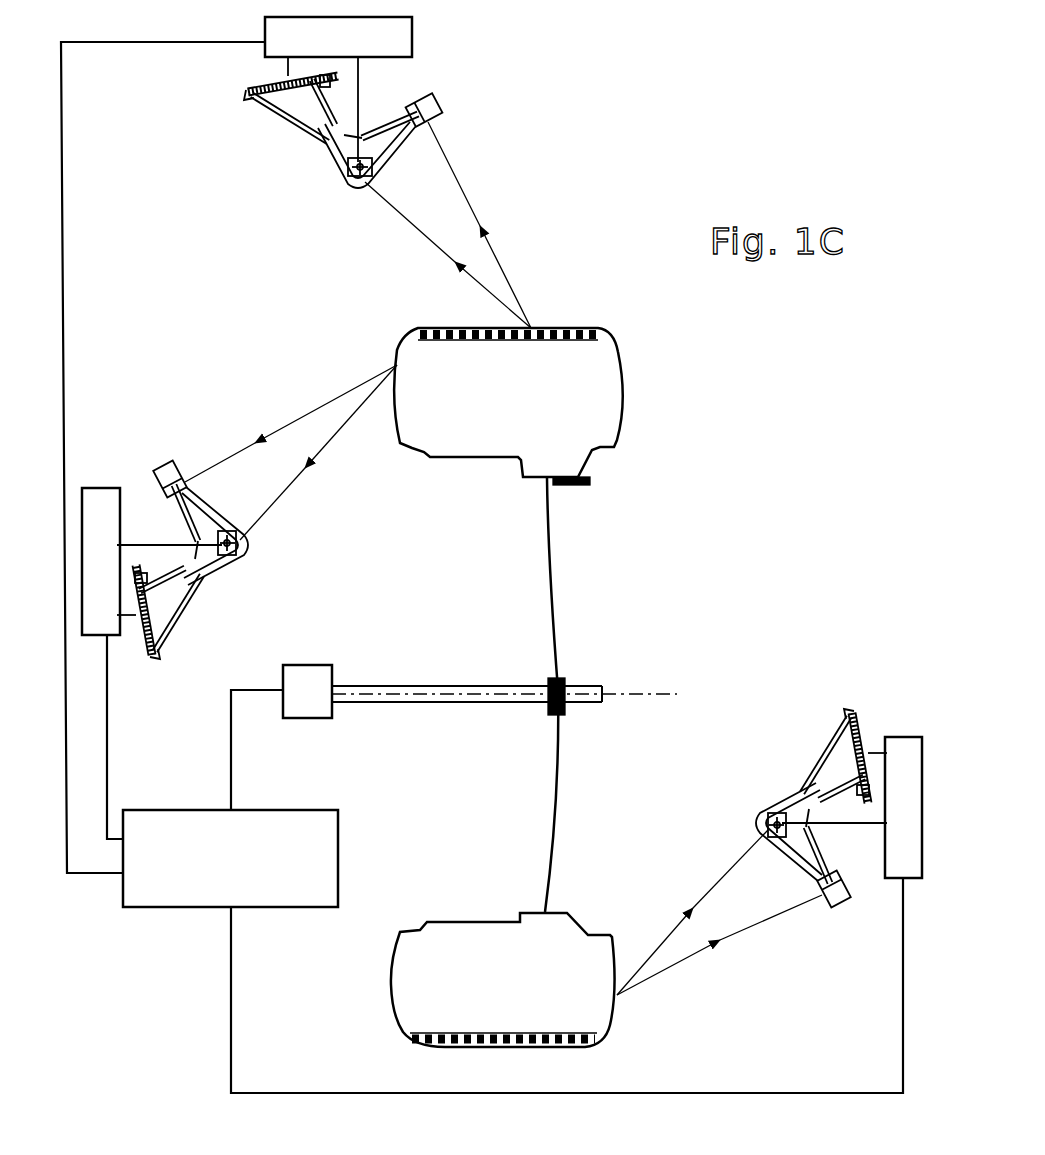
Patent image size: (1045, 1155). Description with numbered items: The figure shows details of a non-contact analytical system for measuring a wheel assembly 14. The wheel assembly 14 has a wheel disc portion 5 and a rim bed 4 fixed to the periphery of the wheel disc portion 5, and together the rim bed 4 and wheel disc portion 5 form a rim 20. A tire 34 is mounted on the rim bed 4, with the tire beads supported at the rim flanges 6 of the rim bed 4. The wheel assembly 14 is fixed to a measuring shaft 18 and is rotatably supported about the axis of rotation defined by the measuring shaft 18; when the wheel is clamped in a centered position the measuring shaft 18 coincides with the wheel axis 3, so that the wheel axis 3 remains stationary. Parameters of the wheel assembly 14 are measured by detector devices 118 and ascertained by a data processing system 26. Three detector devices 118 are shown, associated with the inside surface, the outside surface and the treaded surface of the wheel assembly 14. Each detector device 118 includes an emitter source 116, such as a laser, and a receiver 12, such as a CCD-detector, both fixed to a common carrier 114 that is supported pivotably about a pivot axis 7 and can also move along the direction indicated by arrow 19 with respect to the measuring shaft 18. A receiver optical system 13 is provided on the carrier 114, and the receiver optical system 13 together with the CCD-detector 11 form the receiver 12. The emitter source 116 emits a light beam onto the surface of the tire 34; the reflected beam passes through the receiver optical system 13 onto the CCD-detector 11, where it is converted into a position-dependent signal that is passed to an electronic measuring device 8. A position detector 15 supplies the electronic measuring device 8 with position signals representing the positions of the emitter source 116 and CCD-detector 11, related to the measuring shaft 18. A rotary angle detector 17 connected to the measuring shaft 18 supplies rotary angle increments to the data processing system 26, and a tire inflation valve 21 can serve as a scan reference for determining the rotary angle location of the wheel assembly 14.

The wheel axis 3 is at (497, 696).
The rim bed 4 is at (492, 460).
The wheel disc portion 5 is at (550, 800).
The rim flanges 6 is at (612, 450).
The pivot axis 7 is at (378, 170).
The electronic measuring device 8 is at (412, 40).
The CCD-detector 11 is at (262, 108).
The receiver 12 is at (296, 140).
The receiver optical system 13 is at (322, 140).
The wheel assembly 14 is at (580, 584).
The position detector 15 is at (352, 186).
The rotary angle detector 17 is at (300, 718).
The measuring shaft 18 is at (428, 686).
The arrow 19 is at (720, 57).
The rim 20 is at (498, 552).
The tire inflation valve 21 is at (585, 487).
The data processing system 26 is at (185, 907).
The tire 34 is at (622, 410).
The carrier 114 is at (389, 128).
The emitter source 116 is at (437, 100).
The detector device 118 is at (488, 151).